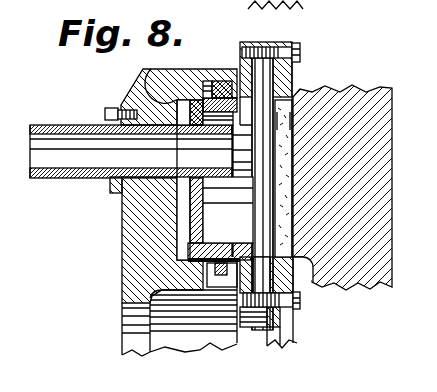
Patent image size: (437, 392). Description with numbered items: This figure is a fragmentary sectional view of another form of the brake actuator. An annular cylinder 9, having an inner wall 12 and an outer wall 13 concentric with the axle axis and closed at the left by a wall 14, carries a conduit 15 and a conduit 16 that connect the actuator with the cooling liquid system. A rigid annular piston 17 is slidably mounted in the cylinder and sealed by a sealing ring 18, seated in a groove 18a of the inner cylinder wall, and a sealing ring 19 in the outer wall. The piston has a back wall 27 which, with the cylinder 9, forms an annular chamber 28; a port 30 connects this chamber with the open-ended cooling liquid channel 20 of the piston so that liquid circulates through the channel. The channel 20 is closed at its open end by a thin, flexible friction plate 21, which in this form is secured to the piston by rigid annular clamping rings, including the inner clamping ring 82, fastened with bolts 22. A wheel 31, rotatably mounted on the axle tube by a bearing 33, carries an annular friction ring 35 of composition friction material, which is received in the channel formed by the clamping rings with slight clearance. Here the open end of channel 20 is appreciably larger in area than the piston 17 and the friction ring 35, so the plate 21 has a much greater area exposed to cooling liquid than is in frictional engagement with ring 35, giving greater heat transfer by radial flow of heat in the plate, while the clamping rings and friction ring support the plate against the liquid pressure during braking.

The annular cylinder 9 is at (133, 82).
The inner wall 12 is at (195, 262).
The outer wall 13 is at (153, 72).
The wall 14 is at (192, 178).
The inlet conduit 15 is at (205, 82).
The outlet conduit 16 is at (67, 126).
The annular piston 17 is at (250, 44).
The sealing ring 18 is at (227, 281).
The groove 18a is at (210, 270).
The sealing ring 19 is at (221, 82).
The annular channel 20 is at (238, 161).
The friction plate 21 is at (268, 47).
The bolts 22 is at (300, 53).
The back wall 27 is at (197, 229).
The annular chamber 28 is at (182, 223).
The port 30 is at (196, 183).
The wheel 31 is at (418, 184).
The bearing 33 is at (293, 77).
The friction ring 35 is at (283, 120).
The inner clamping ring 82 is at (310, 284).